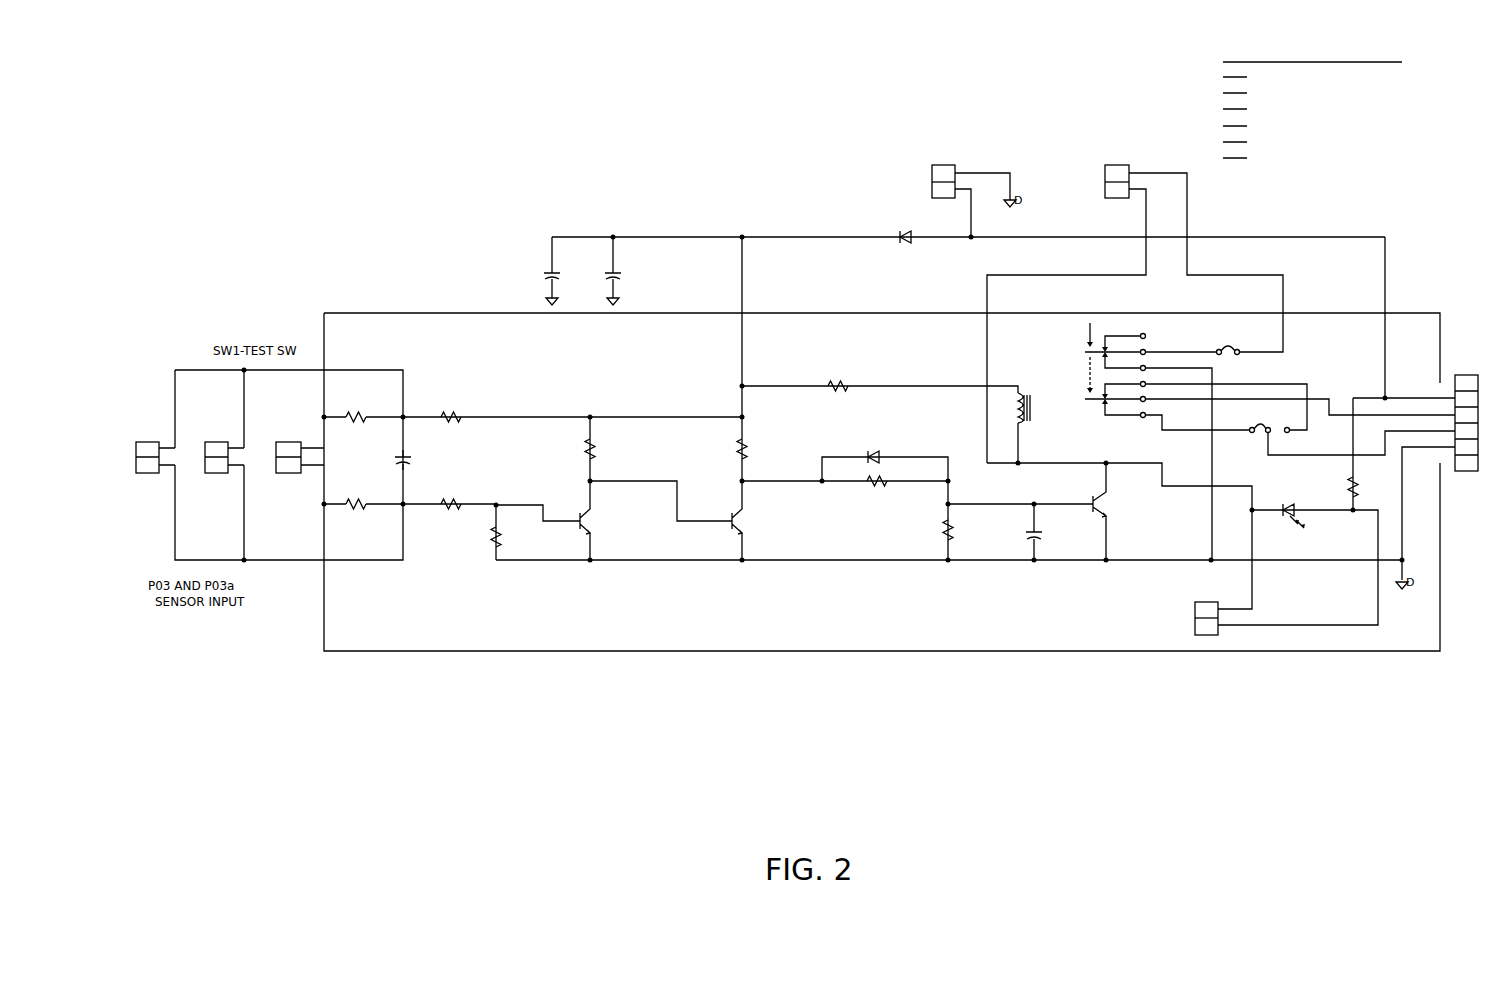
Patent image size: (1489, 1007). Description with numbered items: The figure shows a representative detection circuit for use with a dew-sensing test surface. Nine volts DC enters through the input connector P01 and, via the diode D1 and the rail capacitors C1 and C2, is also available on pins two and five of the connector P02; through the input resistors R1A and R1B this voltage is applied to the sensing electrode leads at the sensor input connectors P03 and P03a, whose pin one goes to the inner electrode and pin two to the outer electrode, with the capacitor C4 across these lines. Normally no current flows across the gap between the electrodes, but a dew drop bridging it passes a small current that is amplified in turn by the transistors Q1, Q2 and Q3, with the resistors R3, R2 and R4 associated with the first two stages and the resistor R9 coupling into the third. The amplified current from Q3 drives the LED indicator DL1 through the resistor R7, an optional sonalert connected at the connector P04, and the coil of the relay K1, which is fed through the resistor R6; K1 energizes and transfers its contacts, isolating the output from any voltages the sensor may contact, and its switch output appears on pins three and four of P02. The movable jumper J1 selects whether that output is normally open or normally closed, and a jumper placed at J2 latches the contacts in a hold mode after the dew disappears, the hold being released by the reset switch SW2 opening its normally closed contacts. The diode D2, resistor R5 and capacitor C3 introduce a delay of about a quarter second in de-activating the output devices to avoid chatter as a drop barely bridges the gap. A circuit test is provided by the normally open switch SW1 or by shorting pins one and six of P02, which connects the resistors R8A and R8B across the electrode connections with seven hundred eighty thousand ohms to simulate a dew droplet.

The sensor input connector P03a is at (155, 450).
The sensor input connector P03 is at (224, 450).
The circuit test switch SW1 is at (300, 450).
The circuit test resistor R8A is at (363, 416).
The input resistor R1A is at (450, 416).
The circuit test resistor R8B is at (363, 503).
The input resistor R1B is at (450, 503).
The capacitor C4 is at (421, 461).
The resistor R3 is at (520, 538).
The resistor R2 is at (610, 449).
The resistor R4 is at (762, 449).
The resistor R6 is at (880, 386).
The resistor R9 is at (883, 488).
The diode D2 is at (896, 449).
The resistor R5 is at (968, 528).
The capacitor C3 is at (1048, 532).
The resistor R7 is at (1369, 484).
The transistor Q1 is at (613, 520).
The transistor Q2 is at (765, 520).
The transistor Q3 is at (1128, 511).
The capacitor C1 is at (565, 271).
The capacitor C2 is at (632, 271).
The diode D1 is at (908, 235).
The 9 VDC input connector P01 is at (945, 167).
The reset switch SW2 is at (1121, 167).
The relay K1 is at (1236, 439).
The jumper J2 is at (1292, 354).
The movable jumper J1 is at (1346, 433).
The LED indicator DL1 is at (1308, 506).
The sonalert connector P04 is at (1167, 611).
The connector P02 is at (1351, 255).